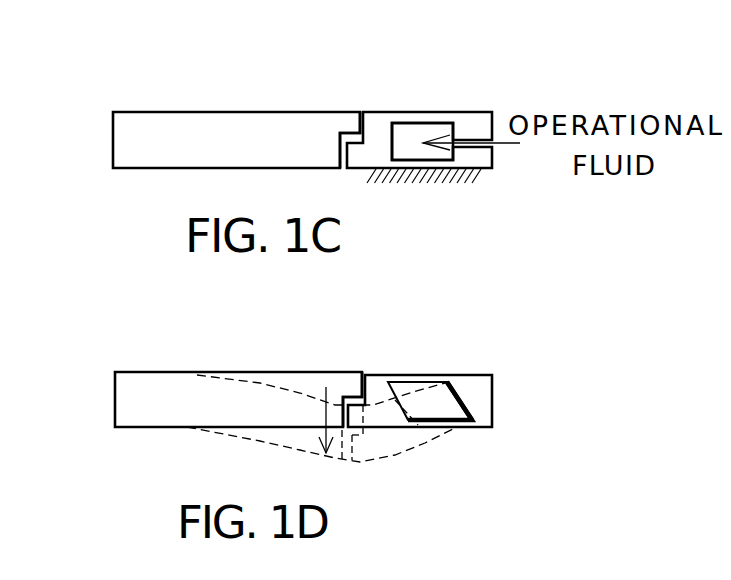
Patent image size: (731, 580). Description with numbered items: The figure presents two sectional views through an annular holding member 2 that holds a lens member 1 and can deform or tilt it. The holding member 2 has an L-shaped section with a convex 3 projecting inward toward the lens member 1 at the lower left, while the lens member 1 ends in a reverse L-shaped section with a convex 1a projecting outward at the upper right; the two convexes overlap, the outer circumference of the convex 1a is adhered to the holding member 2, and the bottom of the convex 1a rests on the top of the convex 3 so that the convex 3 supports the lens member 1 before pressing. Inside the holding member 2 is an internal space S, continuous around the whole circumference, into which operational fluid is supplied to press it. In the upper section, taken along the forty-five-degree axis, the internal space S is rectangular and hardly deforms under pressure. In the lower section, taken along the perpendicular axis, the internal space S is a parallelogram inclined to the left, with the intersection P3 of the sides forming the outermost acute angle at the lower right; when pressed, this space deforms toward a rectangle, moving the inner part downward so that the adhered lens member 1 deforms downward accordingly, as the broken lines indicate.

In FIG. 1C, the lens member 1 is at (230, 128).
In FIG. 1D, the lens member 1 is at (167, 395).
In FIG. 1C, the convex 1a is at (345, 124).
In FIG. 1D, the convex 1a is at (345, 382).
In FIG. 1C, the holding member 2 is at (478, 128).
In FIG. 1D, the holding member 2 is at (473, 388).
In FIG. 1C, the convex 3 is at (365, 159).
In FIG. 1C, the internal space S is at (425, 128).
In FIG. 1D, the internal space S is at (440, 410).
In FIG. 1D, the intersection P3 is at (495, 427).